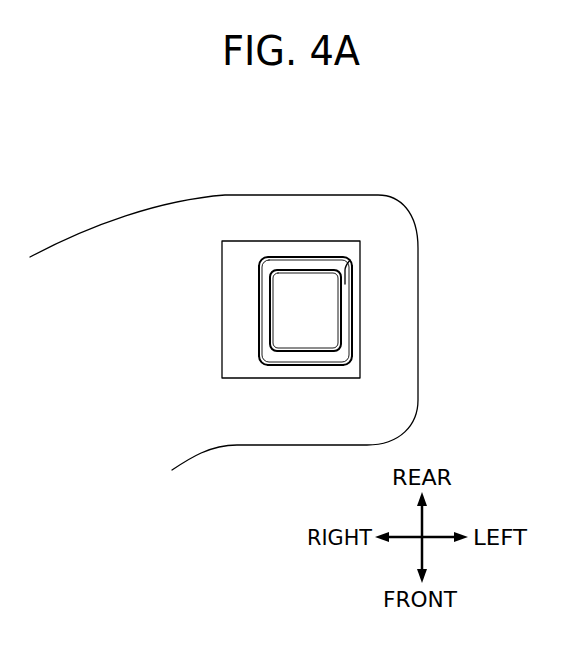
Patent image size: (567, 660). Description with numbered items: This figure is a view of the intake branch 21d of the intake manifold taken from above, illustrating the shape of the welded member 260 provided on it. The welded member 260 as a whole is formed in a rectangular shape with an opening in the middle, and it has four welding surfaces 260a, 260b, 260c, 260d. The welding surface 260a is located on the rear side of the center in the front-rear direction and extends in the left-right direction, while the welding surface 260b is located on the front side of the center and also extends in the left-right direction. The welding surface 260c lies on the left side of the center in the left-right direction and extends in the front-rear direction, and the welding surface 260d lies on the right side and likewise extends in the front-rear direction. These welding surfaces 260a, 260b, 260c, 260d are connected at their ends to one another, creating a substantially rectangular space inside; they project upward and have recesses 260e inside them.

The intake branch 21d is at (122, 215).
The welded member 260 is at (272, 241).
The welding surface 260a is at (307, 257).
The welding surface 260b is at (307, 365).
The welding surface 260c is at (352, 312).
The welding surface 260d is at (259, 320).
The recess 260e is at (350, 260).